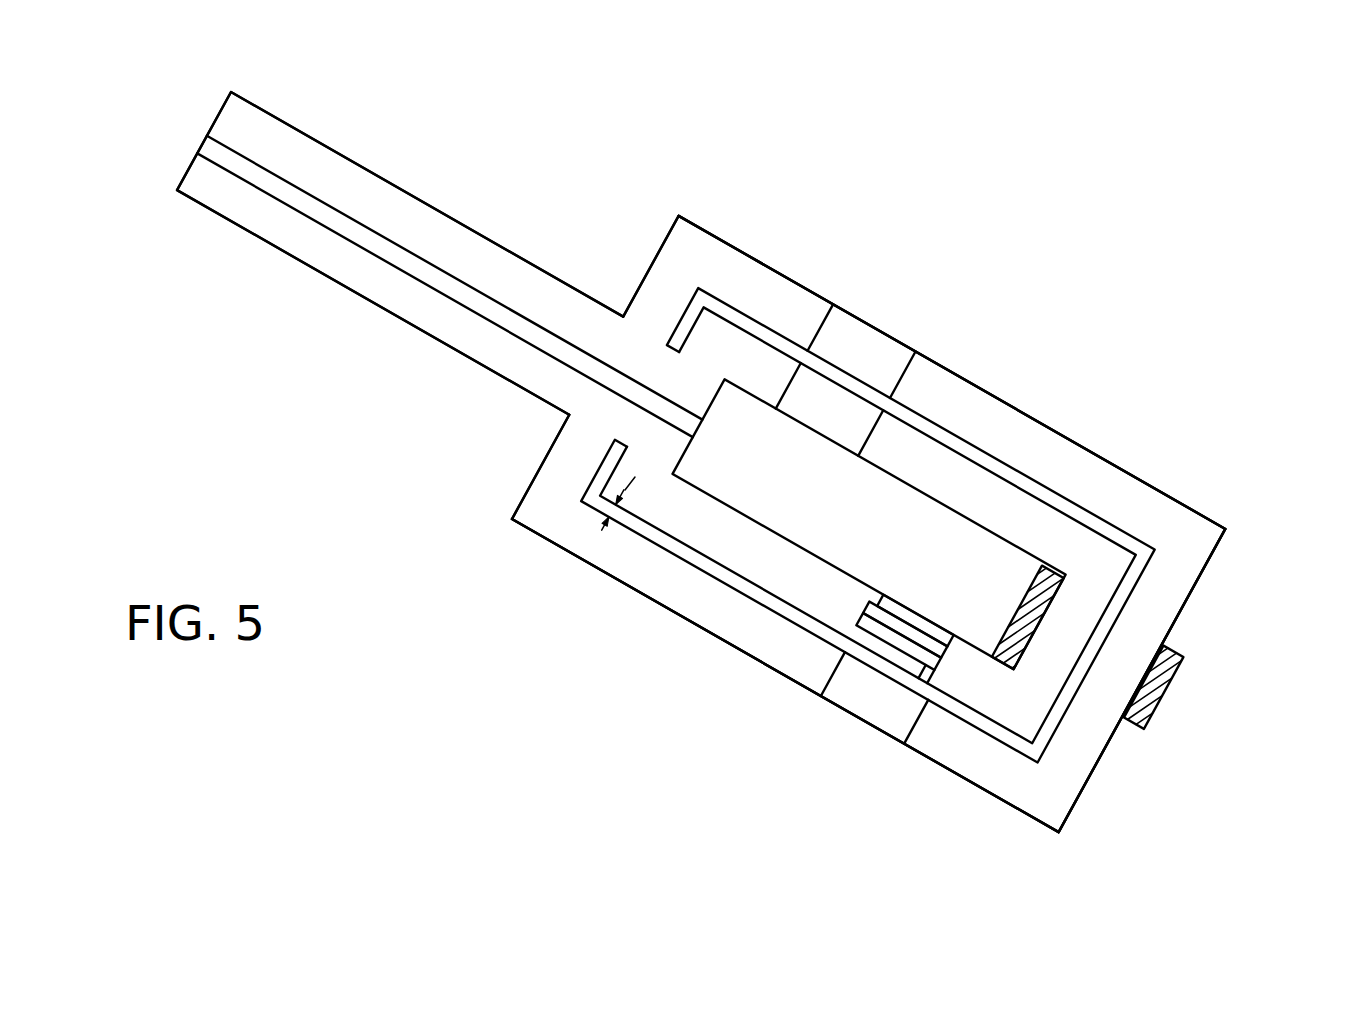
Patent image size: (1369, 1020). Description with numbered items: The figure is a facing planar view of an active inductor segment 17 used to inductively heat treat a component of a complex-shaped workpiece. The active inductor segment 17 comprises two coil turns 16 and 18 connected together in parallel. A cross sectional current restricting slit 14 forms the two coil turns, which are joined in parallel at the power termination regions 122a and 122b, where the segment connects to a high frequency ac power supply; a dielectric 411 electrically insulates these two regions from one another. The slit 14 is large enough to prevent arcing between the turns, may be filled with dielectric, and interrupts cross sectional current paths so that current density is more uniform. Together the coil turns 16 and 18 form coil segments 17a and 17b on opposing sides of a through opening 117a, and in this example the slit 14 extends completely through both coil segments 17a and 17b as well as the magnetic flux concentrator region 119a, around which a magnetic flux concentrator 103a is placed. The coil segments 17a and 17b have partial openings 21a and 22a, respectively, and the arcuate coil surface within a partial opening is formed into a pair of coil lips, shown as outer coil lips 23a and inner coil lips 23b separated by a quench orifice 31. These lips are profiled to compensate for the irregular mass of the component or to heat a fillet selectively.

The active inductor segment 17 is at (850, 90).
The coil turn 16 is at (1060, 453).
The coil segment 17a is at (709, 712).
The coil segment 17b is at (1030, 347).
The magnetic flux concentrator region 119a is at (1239, 614).
The power termination region 122a is at (307, 157).
The dielectric 411 is at (215, 150).
The power termination region 122b is at (280, 228).
The coil turn 18 is at (1073, 545).
The cross sectional current restricting slit 14 is at (717, 570).
The through opening 117a is at (868, 522).
The partial opening 22a is at (882, 326).
The partial opening 21a is at (814, 733).
The outer coil lip 23a is at (878, 643).
The quench orifice 31 is at (932, 680).
The inner coil lip 23b is at (928, 670).
The magnetic flux concentrator 103a is at (1163, 692).